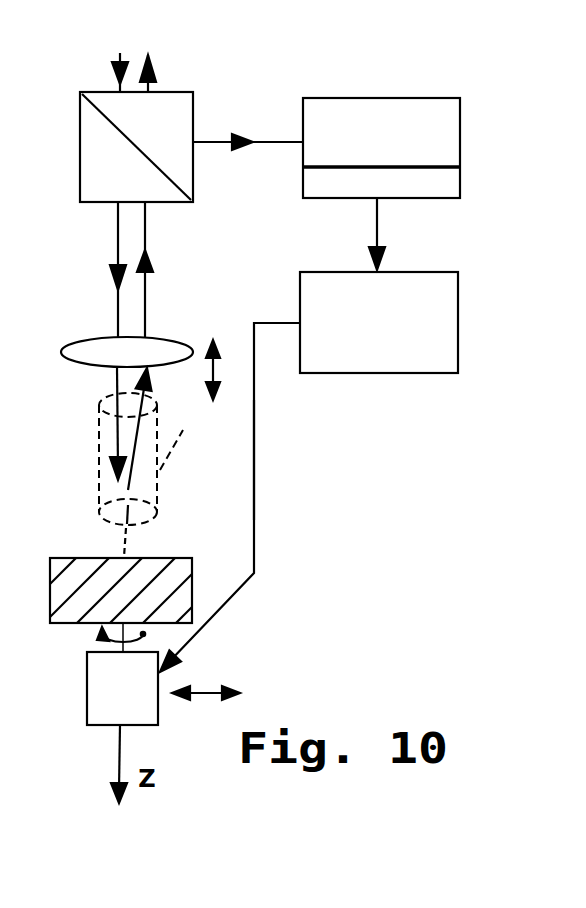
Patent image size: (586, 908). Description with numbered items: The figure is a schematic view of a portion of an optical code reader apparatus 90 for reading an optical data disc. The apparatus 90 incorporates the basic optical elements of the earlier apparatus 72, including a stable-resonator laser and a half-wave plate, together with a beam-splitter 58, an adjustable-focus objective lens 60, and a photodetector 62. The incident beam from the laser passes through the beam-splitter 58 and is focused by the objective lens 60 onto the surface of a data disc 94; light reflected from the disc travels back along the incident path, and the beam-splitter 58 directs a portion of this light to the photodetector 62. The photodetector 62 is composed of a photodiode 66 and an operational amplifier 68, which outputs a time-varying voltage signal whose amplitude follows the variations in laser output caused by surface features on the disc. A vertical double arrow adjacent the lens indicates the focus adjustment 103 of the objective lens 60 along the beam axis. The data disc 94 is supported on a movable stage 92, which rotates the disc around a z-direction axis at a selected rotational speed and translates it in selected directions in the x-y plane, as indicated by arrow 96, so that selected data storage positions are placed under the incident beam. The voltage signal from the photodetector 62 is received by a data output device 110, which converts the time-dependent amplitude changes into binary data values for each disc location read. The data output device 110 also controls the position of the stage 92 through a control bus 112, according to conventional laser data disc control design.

The beam-splitter 58 is at (195, 172).
The adjustable-focus objective lens 60 is at (173, 340).
The photodetector 62 is at (345, 91).
The photodiode 66 is at (303, 125).
The operational amplifier 68 is at (348, 200).
The apparatus 72 is at (208, 84).
The optical code reader apparatus 90 is at (276, 466).
The movable stage 92 is at (135, 728).
The data disc 94 is at (168, 540).
The arrow 96 is at (205, 687).
The lens axial movement 103 is at (191, 382).
The data output device 110 is at (350, 372).
The control bus 112 is at (255, 505).